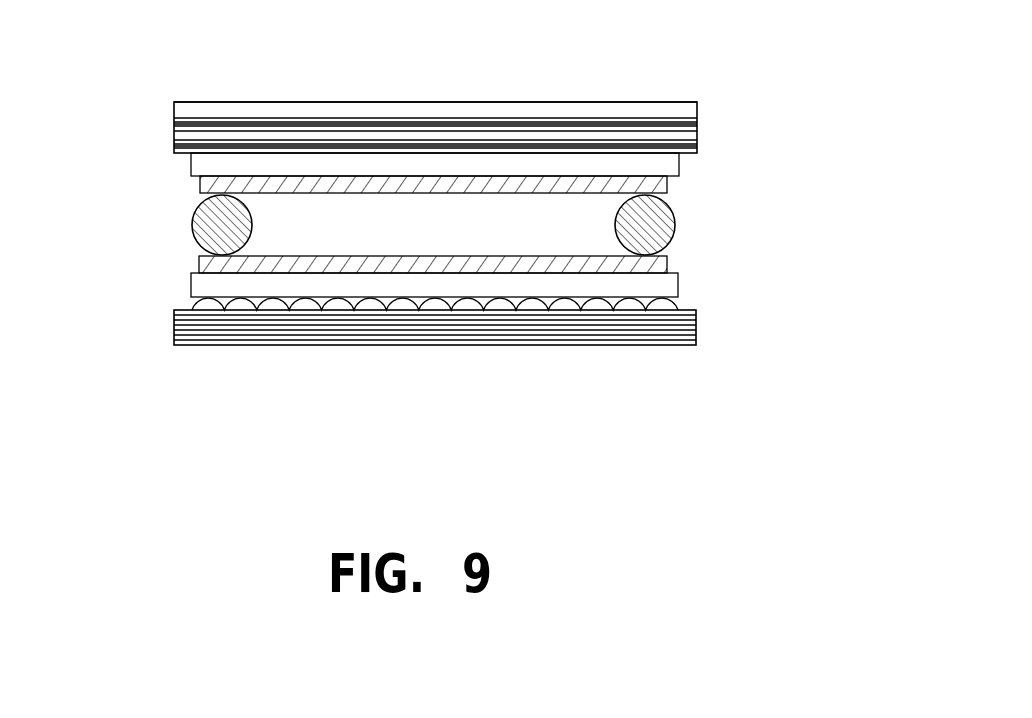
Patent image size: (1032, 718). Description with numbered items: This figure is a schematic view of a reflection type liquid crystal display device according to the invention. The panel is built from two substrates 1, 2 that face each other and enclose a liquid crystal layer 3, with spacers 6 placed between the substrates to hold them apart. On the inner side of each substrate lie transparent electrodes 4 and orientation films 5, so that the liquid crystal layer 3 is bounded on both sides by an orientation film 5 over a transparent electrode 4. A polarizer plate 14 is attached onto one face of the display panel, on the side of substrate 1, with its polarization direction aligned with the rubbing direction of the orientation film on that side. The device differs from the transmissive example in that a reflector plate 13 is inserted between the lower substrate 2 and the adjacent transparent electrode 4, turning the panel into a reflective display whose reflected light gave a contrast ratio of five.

The substrate 1 is at (697, 137).
The substrate 2 is at (696, 330).
The liquid crystal layer 3 is at (418, 243).
The transparent electrode 4 is at (679, 165).
The orientation film 5 is at (667, 186).
The spacer 6 is at (193, 210).
The reflector plate 13 is at (357, 303).
The polarizer plate 14 is at (426, 103).